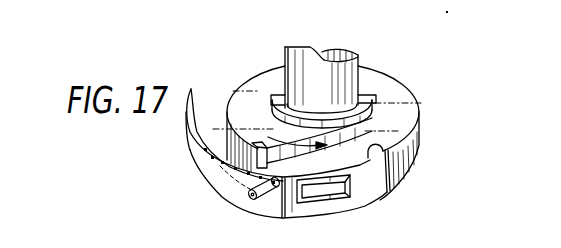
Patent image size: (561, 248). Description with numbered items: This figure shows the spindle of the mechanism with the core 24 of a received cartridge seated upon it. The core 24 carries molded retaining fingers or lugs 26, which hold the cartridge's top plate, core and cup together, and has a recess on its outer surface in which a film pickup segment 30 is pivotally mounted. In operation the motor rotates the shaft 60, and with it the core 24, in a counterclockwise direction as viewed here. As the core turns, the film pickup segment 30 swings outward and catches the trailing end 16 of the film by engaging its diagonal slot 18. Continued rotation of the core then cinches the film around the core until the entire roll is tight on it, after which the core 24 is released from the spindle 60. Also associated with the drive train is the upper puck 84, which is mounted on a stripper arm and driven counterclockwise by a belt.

The trailing end 16 is at (190, 152).
The diagonal slot 18 is at (250, 197).
The core 24 is at (410, 108).
The retaining fingers or lugs 26 is at (381, 93).
The film pickup segment 30 is at (370, 188).
The shaft 60 is at (284, 62).
The upper puck 84 is at (95, 236).